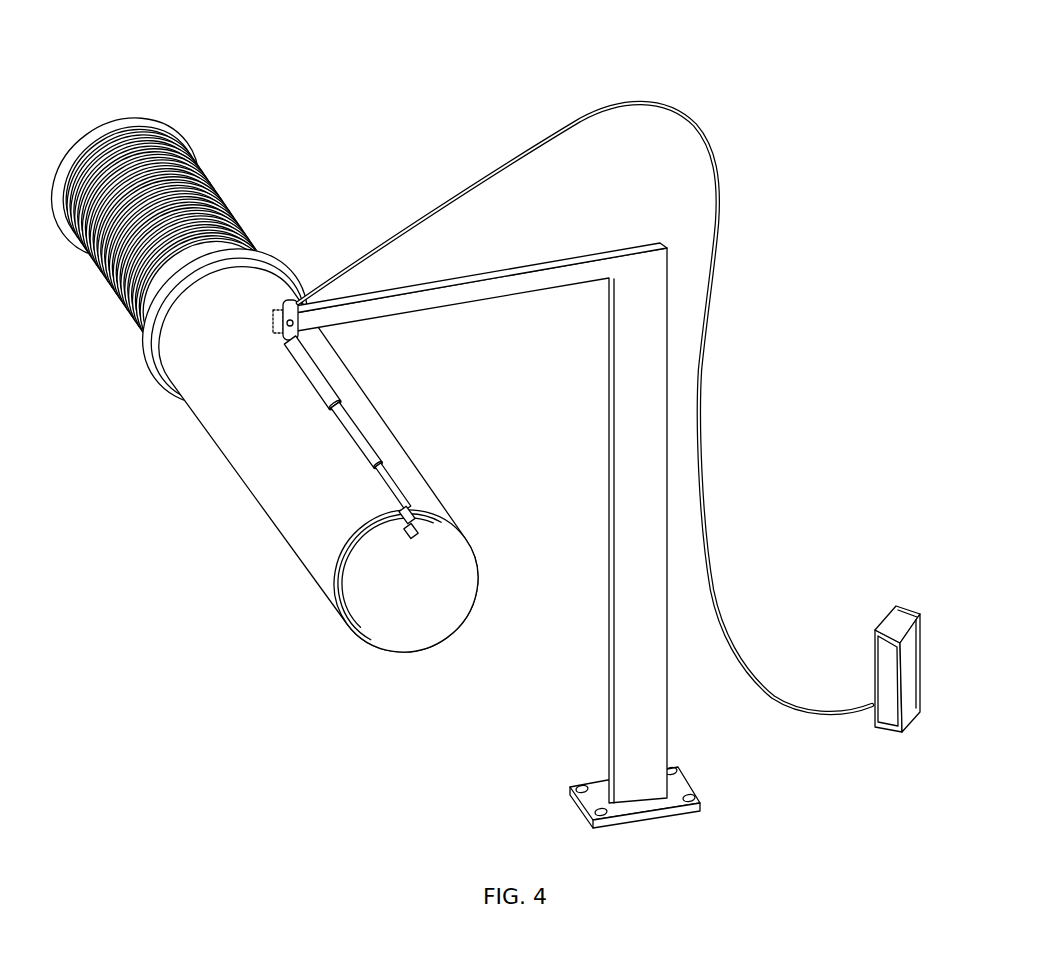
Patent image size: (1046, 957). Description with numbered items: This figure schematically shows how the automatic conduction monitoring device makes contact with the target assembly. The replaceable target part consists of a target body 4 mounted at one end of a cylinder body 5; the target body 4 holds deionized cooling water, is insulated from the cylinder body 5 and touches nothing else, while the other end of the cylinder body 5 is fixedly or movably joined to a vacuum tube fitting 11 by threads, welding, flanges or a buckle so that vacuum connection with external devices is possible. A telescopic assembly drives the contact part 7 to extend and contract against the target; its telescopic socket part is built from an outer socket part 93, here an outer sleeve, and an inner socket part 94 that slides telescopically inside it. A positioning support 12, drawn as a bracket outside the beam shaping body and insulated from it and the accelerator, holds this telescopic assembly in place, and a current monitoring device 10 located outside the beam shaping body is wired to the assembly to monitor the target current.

The target body 4 is at (390, 603).
The cylinder body 5 is at (220, 387).
The contact part 7 is at (340, 610).
The current monitoring device 10 is at (897, 617).
The vacuum tube fitting 11 is at (162, 197).
The positioning support 12 is at (645, 342).
The outer socket part 93 is at (315, 380).
The inner socket part 94 is at (408, 508).